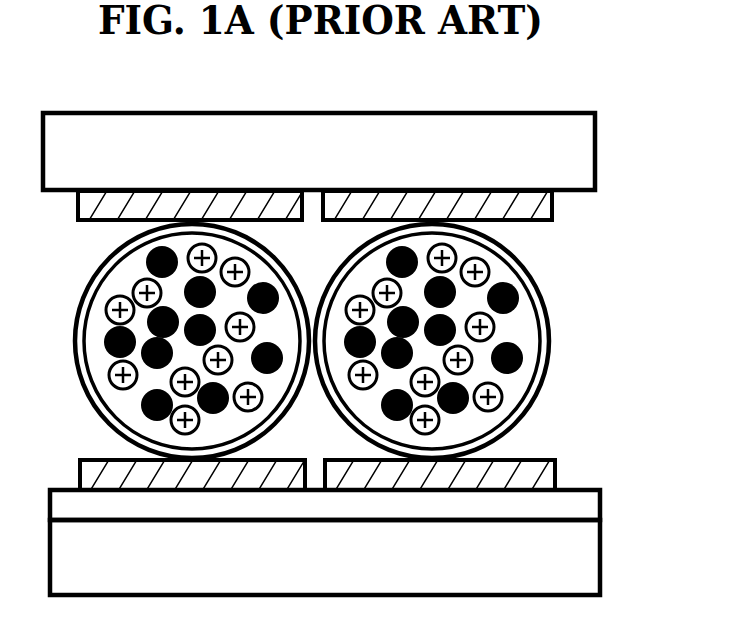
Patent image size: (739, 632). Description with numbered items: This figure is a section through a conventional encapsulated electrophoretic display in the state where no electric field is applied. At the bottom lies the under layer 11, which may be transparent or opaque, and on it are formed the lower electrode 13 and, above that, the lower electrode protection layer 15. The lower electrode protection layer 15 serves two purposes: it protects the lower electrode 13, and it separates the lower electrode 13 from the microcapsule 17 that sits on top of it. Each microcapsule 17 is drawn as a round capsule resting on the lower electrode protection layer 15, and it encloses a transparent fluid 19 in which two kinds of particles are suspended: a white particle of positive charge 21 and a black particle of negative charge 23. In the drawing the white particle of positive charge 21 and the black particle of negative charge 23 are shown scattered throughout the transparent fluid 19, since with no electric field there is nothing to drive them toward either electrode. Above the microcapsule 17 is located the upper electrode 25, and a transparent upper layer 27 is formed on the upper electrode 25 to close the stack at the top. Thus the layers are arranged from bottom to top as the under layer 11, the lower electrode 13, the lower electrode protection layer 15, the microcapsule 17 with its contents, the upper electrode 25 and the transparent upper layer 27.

The under layer 11 is at (563, 550).
The lower electrode 13 is at (563, 505).
The lower electrode protection layer 15 is at (537, 470).
The microcapsule 17 is at (548, 373).
The transparent fluid 19 is at (518, 325).
The white particle of positive charge 21 is at (110, 375).
The black particle of negative charge 23 is at (145, 261).
The upper electrode 25 is at (535, 207).
The transparent upper layer 27 is at (565, 152).